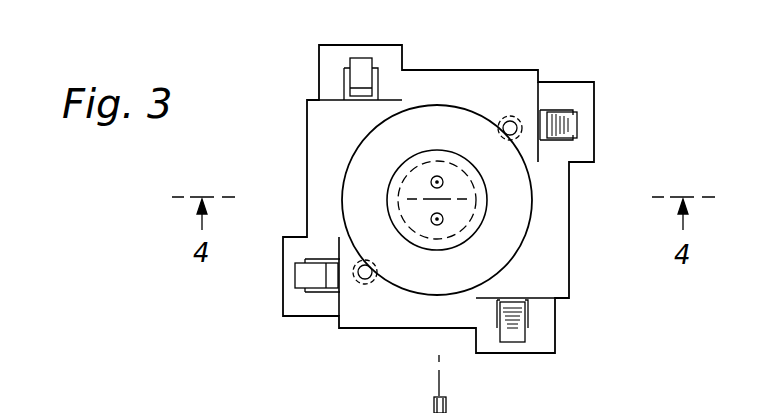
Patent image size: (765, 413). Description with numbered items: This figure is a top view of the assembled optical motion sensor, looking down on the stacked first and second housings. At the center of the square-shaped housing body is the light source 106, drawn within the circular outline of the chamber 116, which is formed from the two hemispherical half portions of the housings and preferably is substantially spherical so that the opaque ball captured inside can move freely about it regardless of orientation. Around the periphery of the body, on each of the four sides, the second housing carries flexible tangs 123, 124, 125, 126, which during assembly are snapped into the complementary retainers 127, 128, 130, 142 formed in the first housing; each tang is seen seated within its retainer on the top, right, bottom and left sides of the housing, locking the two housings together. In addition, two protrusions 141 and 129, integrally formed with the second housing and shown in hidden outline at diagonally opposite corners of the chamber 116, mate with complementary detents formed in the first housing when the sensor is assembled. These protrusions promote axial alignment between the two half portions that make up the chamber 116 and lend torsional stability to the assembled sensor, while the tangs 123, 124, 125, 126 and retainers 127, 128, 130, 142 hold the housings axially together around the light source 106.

The light source 106 is at (452, 170).
The chamber 116 is at (472, 223).
The flexible tang 123 is at (569, 122).
The flexible tang 124 is at (520, 335).
The flexible tang 125 is at (300, 275).
The flexible tang 126 is at (360, 66).
The retainer 127 is at (583, 93).
The retainer 128 is at (545, 318).
The protrusion 129 is at (372, 285).
The retainer 130 is at (396, 60).
The protrusion 141 is at (513, 115).
The retainer 142 is at (292, 242).